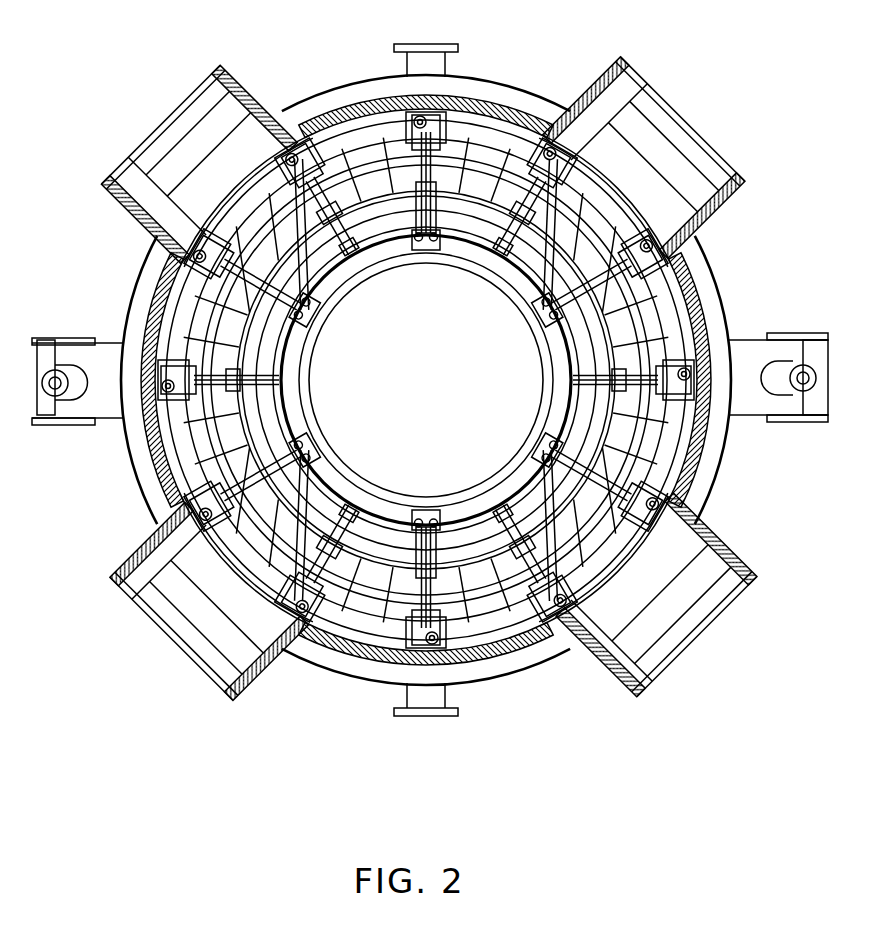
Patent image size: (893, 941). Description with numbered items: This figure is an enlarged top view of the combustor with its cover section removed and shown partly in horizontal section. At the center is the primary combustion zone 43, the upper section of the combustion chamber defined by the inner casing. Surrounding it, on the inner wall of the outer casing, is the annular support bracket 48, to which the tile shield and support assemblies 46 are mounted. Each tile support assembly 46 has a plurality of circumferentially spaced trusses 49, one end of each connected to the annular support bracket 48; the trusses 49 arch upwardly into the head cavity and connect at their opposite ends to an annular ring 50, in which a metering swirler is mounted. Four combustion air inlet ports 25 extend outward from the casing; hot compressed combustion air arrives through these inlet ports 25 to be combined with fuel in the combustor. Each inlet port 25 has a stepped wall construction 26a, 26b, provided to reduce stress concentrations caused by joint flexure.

The combustion air inlet ports 25 is at (280, 134).
The stepped wall construction 26a is at (240, 90).
The stepped wall construction 26b is at (226, 74).
The primary combustion zone 43 is at (410, 405).
The tile shield and support assemblies 46 is at (519, 200).
The annular support bracket 48 is at (357, 133).
The trusses 49 is at (295, 297).
The annular ring 50 is at (377, 252).